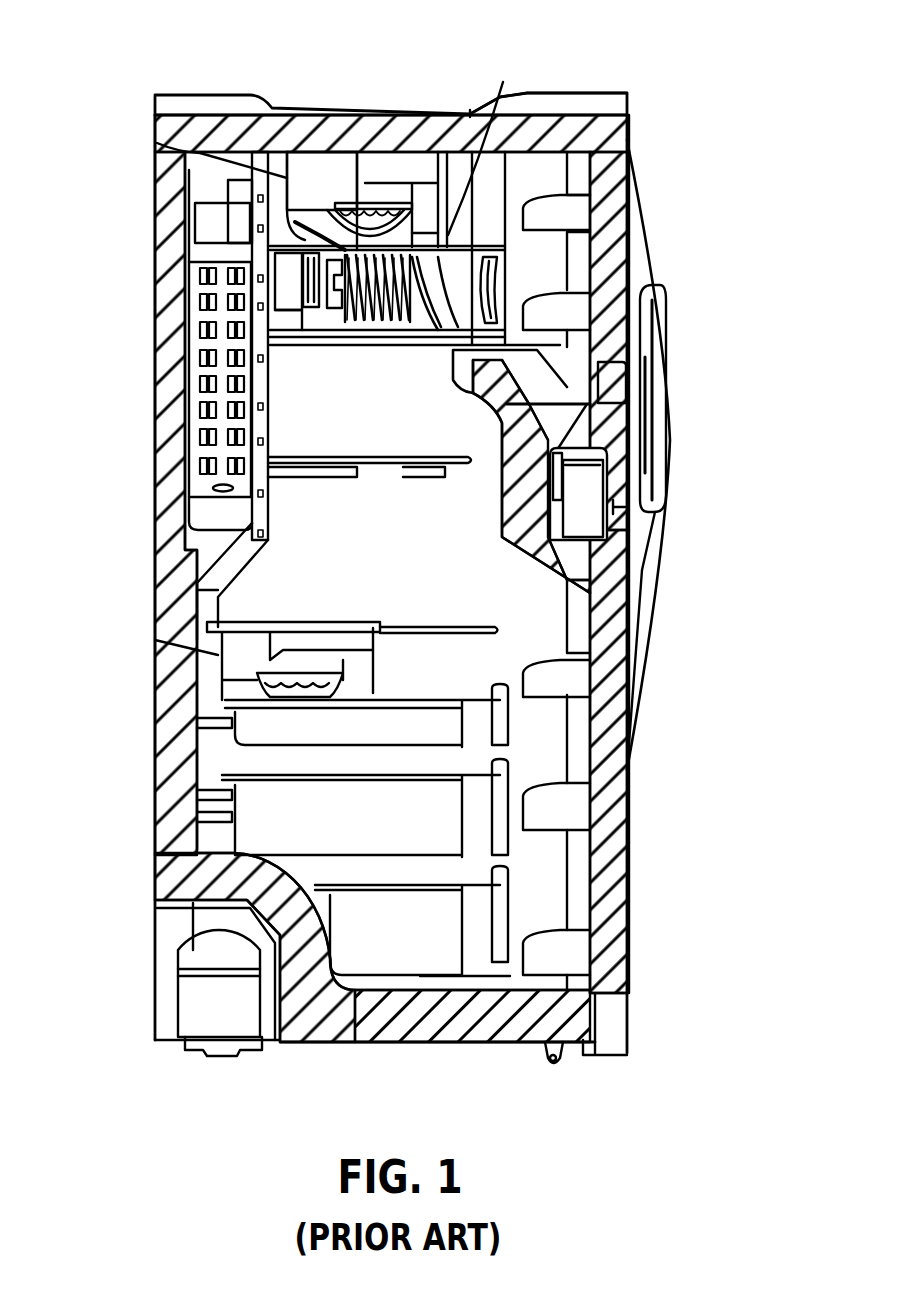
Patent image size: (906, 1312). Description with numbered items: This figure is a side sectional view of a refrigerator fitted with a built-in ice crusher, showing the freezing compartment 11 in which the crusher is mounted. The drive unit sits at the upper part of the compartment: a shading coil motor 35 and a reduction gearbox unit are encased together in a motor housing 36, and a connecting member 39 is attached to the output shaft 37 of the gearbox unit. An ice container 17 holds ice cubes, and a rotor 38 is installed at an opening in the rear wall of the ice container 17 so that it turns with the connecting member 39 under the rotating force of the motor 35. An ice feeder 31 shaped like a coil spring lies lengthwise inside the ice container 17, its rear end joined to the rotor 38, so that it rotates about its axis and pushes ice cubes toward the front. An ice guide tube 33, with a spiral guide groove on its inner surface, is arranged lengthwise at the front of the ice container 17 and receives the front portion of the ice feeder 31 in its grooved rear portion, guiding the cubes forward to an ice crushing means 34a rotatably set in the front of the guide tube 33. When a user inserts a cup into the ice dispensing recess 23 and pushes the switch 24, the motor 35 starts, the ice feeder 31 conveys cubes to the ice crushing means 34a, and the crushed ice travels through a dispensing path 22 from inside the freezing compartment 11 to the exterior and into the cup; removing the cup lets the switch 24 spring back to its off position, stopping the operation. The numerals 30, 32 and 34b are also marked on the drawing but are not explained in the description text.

The freezing compartment 11 is at (340, 558).
The ice container 17 is at (358, 195).
The dispensing path 22 is at (605, 325).
The ice dispensing recess 23 is at (615, 507).
The switch 24 is at (560, 485).
The cooling module 30 is at (375, 345).
The ice feeder 31 is at (405, 343).
The blade 32 is at (433, 343).
The ice guide tube 33 is at (490, 103).
The ice crushing means 34a is at (505, 263).
The lower support plate 34b is at (455, 360).
The shading coil motor 35 is at (280, 272).
The motor housing 36 is at (287, 210).
The output shaft 37 is at (285, 298).
The rotor 38 is at (332, 308).
The connecting member 39 is at (273, 432).